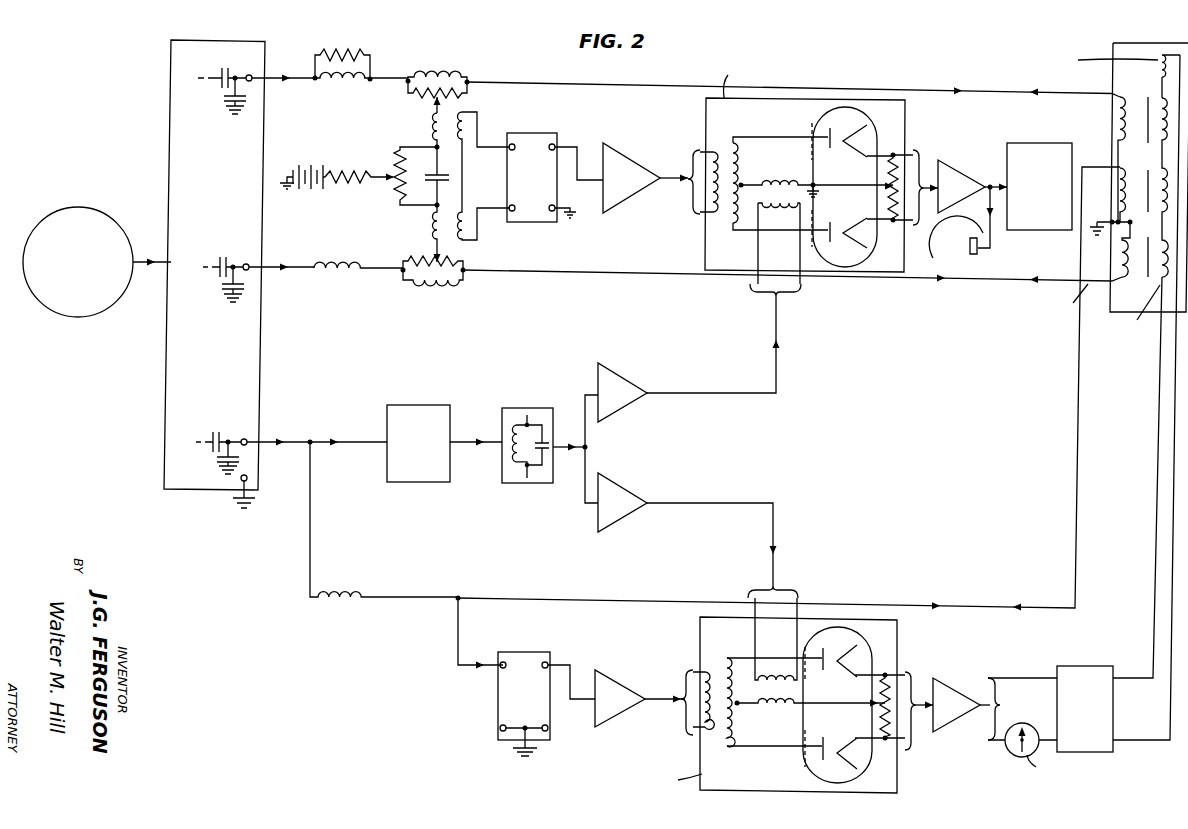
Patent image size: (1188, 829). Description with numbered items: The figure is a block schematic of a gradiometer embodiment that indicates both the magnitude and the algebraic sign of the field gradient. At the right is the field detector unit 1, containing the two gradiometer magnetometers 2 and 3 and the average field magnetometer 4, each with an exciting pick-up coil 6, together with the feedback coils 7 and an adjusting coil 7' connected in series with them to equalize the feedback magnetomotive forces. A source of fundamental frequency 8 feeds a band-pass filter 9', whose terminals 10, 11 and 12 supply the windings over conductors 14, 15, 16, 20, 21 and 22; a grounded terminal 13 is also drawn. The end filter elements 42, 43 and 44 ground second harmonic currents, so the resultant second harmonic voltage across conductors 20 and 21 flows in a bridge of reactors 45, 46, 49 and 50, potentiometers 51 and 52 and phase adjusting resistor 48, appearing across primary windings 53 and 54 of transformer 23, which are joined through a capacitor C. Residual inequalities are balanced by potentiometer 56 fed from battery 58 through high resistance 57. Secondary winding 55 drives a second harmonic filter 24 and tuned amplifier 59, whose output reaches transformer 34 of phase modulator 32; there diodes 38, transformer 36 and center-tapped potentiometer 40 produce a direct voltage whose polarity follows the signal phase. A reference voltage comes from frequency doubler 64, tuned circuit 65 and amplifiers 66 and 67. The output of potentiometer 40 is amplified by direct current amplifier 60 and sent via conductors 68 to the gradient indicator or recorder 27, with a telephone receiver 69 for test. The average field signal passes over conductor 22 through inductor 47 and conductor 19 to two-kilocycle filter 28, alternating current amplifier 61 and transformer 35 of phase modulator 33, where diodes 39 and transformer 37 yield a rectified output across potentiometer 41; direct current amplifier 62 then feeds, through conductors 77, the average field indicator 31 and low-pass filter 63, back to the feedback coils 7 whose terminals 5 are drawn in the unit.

The field detector unit 1 is at (1112, 42).
The gradiometer magnetometer 2 is at (1117, 138).
The gradiometer magnetometer 3 is at (1138, 268).
The average field magnetometer 4 is at (1138, 197).
The feedback coil 5 is at (1140, 282).
The exciting pick-up coil 6 is at (1120, 110).
The feedback coil 7 is at (1154, 177).
The adjusting coil 7' is at (1104, 71).
The source of fundamental frequency 8 is at (112, 232).
The band-pass filter 9' is at (204, 265).
The terminal 10 is at (252, 75).
The terminal 11 is at (249, 264).
The terminal 12 is at (247, 439).
The ground terminal 13 is at (240, 478).
The conductor 14 is at (267, 83).
The conductor 15 is at (267, 271).
The conductor 16 is at (267, 447).
The conductor 19 is at (457, 634).
The conductor 20 is at (630, 85).
The conductor 21 is at (582, 276).
The conductor 22 is at (555, 600).
The transformer 23 is at (445, 203).
The second harmonic filter 24 is at (525, 135).
The gradient indicator or recorder 27 is at (1038, 143).
The two-kilocycle filter 28 is at (518, 653).
The average field indicator 31 is at (1010, 748).
The phase modulator 32 is at (847, 98).
The phase modulator 33 is at (817, 620).
The two-coil transformer 34 is at (730, 140).
The transformer 35 is at (725, 663).
The transformer 36 is at (792, 162).
The transformer 37 is at (790, 688).
The diodes 38 is at (868, 128).
The electron tube 39 is at (860, 648).
The center-tapped potentiometer 40 is at (897, 168).
The potentiometer 41 is at (890, 692).
The end filter element 42 is at (224, 99).
The end filter element 43 is at (244, 288).
The end filter element 44 is at (218, 458).
The reactor 45 is at (343, 90).
The reactor 46 is at (334, 283).
The inductor 47 is at (345, 594).
The phase adjusting resistor 48 is at (368, 56).
The reactor 49 is at (449, 70).
The reactor 50 is at (421, 292).
The potentiometer 51 is at (458, 100).
The potentiometer 52 is at (460, 261).
The primary winding 53 is at (428, 127).
The primary winding 54 is at (428, 232).
The secondary winding 55 is at (460, 143).
The potentiometer 56 is at (397, 158).
The high resistance 57 is at (363, 187).
The battery 58 is at (315, 190).
The tuned amplifier 59 is at (630, 193).
The direct current amplifier 60 is at (956, 166).
The alternating current amplifier 61 is at (608, 679).
The direct current amplifier 62 is at (947, 678).
The low-pass filter 63 is at (1080, 667).
The frequency doubler 64 is at (412, 405).
The tuned circuit 65 is at (522, 408).
The amplifier 66 is at (634, 382).
The amplifier 67 is at (634, 492).
The conductors 68 is at (998, 184).
The telephone receiver 69 is at (976, 252).
The conductors 77 is at (1002, 700).
The capacitor C is at (424, 175).